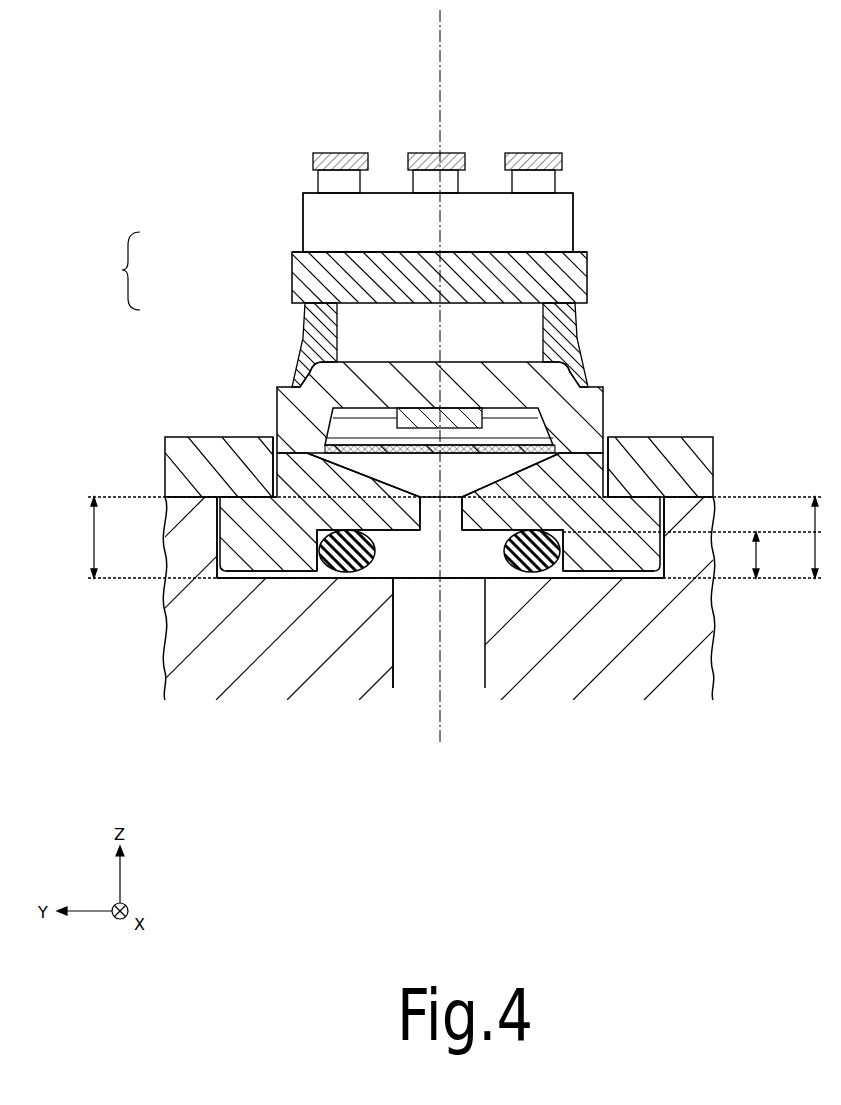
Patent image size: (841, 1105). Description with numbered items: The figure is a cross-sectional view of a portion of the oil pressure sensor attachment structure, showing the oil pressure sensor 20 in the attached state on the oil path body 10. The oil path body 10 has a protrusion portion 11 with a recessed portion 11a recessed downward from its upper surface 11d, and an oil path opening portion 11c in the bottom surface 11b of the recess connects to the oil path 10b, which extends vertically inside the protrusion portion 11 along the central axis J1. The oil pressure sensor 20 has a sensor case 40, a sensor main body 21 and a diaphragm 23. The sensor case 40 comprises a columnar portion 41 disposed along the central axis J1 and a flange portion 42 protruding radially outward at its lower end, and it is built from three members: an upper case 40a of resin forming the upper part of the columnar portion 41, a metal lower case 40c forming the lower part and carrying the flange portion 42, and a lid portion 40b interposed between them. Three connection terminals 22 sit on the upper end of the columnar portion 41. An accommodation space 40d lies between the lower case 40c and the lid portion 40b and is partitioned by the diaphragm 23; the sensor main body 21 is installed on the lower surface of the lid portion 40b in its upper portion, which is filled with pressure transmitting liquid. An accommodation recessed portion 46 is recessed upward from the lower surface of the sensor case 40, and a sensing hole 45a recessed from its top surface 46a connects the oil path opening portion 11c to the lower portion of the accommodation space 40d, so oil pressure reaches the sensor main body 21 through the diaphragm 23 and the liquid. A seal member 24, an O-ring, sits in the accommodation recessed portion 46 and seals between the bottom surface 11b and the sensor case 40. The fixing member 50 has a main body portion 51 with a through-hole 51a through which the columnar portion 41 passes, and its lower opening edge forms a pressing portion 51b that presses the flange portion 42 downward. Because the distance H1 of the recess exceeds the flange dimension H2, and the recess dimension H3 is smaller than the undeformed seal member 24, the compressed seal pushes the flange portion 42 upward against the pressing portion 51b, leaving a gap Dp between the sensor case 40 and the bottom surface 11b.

The oil path body 10 is at (420, 621).
The oil path 10b is at (472, 690).
The protrusion portion 11 is at (194, 624).
The recessed portion 11a is at (245, 580).
The bottom surface 11b is at (617, 592).
The oil path opening portion 11c is at (396, 636).
The upper surface 11d is at (633, 507).
The oil pressure sensor 20 is at (600, 132).
The sensor main body 21 is at (590, 290).
The connection terminals 22 is at (525, 152).
The diaphragm 23 is at (508, 432).
The seal member 24 is at (604, 577).
The sensor case 40 is at (376, 401).
The upper case 40a is at (588, 262).
The lid portion 40b is at (548, 385).
The lower case 40c is at (268, 572).
The accommodation space 40d is at (486, 466).
The columnar portion 41 is at (290, 278).
The flange portion 42 is at (436, 555).
The sensing hole 45a is at (445, 578).
The accommodation recessed portion 46 is at (347, 578).
The top surface 46a is at (545, 530).
The fixing member 50 is at (440, 409).
The main body portion 51 is at (195, 468).
The through-hole 51a is at (278, 392).
The pressing portion 51b is at (712, 480).
The central axis J1 is at (445, 25).
The distance H1 is at (440, 537).
The distance H2 is at (826, 537).
The distance H3 is at (692, 555).
The gap Dp is at (641, 582).